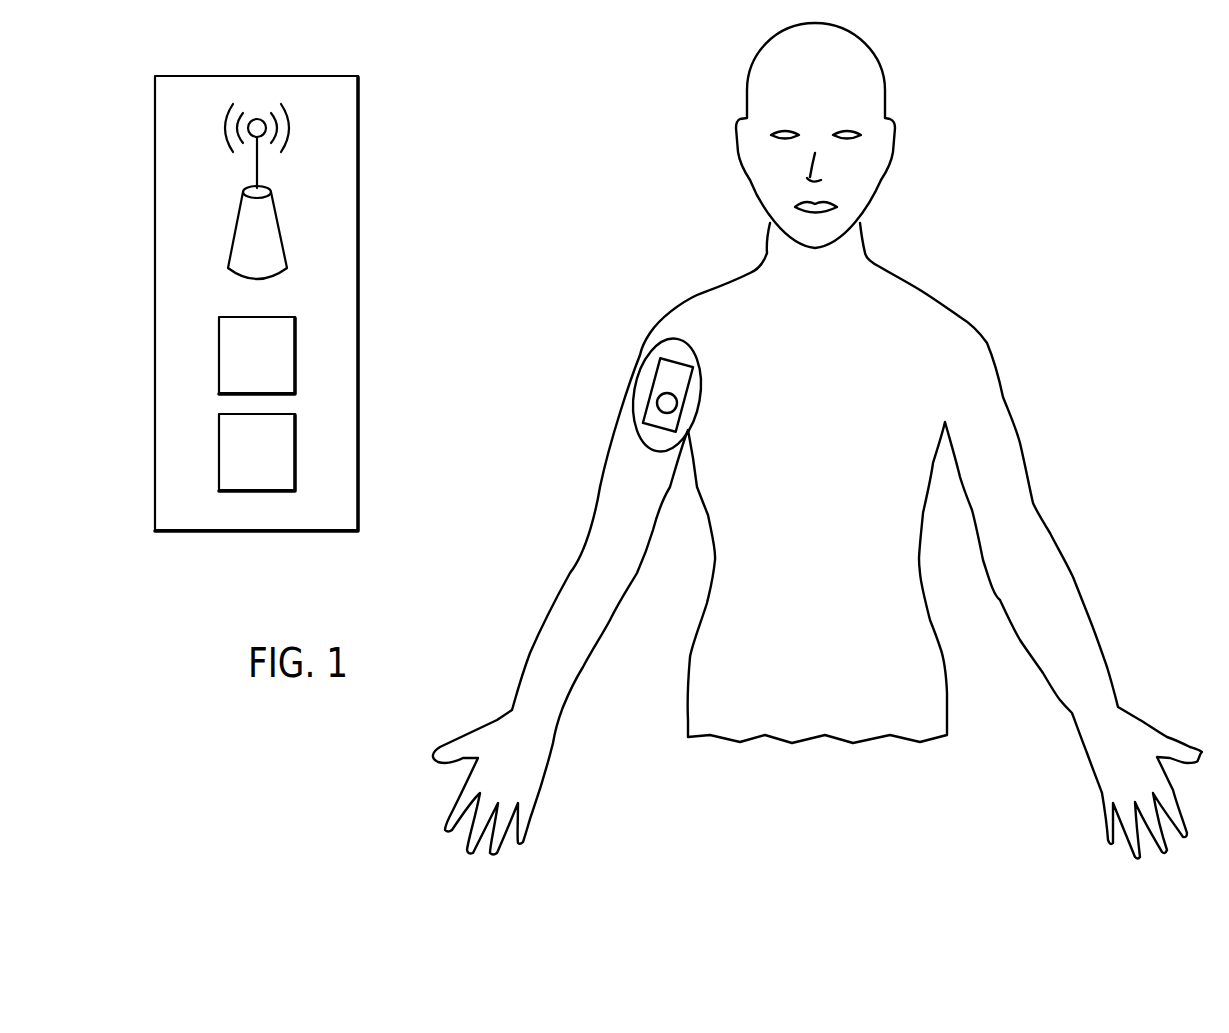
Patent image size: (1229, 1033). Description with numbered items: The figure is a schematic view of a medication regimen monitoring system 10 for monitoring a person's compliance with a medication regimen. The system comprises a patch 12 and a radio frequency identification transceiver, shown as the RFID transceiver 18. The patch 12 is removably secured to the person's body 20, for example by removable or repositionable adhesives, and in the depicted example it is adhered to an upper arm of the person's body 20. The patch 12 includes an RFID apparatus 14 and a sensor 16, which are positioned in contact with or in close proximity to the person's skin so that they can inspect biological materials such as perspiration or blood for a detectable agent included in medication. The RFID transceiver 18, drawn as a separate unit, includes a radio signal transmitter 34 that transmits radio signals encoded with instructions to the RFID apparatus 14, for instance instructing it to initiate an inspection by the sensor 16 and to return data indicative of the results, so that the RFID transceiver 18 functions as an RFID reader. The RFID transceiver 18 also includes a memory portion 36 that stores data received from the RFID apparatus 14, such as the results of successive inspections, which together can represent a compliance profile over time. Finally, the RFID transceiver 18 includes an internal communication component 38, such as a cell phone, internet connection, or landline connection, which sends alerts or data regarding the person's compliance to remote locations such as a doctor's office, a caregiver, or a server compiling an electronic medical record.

The medication regimen monitoring system 10 is at (1068, 160).
The patch 12 is at (632, 432).
The RFID apparatus 14 is at (655, 375).
The sensor 16 is at (660, 403).
The RFID transceiver 18 is at (343, 127).
The person's body 20 is at (770, 317).
The radio signal transmitter 34 is at (267, 237).
The memory portion 36 is at (278, 355).
The communication component 38 is at (278, 454).